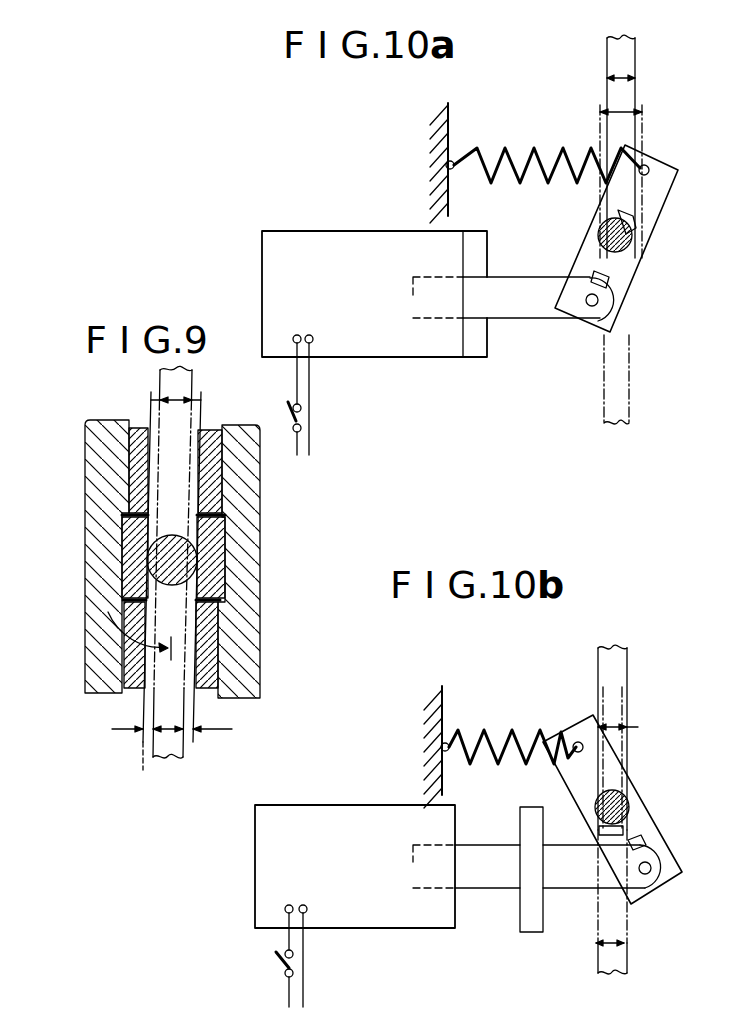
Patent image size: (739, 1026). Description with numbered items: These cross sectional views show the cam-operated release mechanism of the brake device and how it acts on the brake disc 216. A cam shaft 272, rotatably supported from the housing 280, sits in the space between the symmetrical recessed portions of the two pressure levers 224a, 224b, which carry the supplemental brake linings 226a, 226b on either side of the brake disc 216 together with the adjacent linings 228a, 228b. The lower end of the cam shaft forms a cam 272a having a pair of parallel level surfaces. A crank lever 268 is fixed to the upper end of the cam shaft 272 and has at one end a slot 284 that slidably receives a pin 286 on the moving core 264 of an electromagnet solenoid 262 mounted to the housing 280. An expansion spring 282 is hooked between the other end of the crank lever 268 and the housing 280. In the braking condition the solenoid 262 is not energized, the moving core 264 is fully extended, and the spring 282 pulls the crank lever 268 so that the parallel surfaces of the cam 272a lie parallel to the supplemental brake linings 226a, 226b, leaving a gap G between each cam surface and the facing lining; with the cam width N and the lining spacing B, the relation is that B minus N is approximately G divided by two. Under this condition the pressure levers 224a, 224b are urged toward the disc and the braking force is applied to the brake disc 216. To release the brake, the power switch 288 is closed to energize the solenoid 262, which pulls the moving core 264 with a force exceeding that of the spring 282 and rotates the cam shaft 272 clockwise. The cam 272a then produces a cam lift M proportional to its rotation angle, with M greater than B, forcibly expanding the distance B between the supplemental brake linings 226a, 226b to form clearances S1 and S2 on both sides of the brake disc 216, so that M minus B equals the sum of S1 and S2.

In FIG. 9, the brake disc 216 is at (143, 772).
In FIG. 10a, the brake disc 216 is at (606, 387).
In FIG. 10b, the brake disc 216 is at (603, 668).
In FIG. 9, the pressure lever 224a is at (236, 668).
In FIG. 9, the pressure lever 224b is at (98, 680).
In FIG. 9, the supplemental brake lining 226a is at (210, 696).
In FIG. 9, the supplemental brake lining 226b is at (127, 696).
In FIG. 9, the upper bushing 228a is at (240, 568).
In FIG. 9, the upper bushing 228b is at (125, 578).
In FIG. 10a, the electromagnet solenoid 262 is at (345, 247).
In FIG. 10b, the electromagnet solenoid 262 is at (327, 818).
In FIG. 10a, the moving core 264 is at (520, 300).
In FIG. 10b, the moving core 264 is at (493, 878).
In FIG. 10a, the crank lever 268 is at (643, 252).
In FIG. 10b, the crank lever 268 is at (573, 783).
In FIG. 10a, the cam shaft 272 is at (598, 222).
In FIG. 10b, the cam shaft 272 is at (572, 798).
In FIG. 9, the cam 272a is at (170, 535).
In FIG. 10a, the cam 272a is at (598, 240).
In FIG. 10b, the cam 272a is at (618, 790).
In FIG. 10a, the housing 280 is at (448, 116).
In FIG. 10b, the housing 280 is at (445, 700).
In FIG. 10a, the expansion spring 282 is at (530, 157).
In FIG. 10b, the expansion spring 282 is at (526, 736).
In FIG. 10a, the slot 284 is at (617, 290).
In FIG. 10b, the slot 284 is at (644, 852).
In FIG. 10a, the pin 286 is at (583, 322).
In FIG. 10b, the pin 286 is at (660, 892).
In FIG. 10a, the power switch 288 is at (288, 414).
In FIG. 10b, the power switch 288 is at (275, 964).
In FIG. 9, the cam lift M is at (176, 410).
In FIG. 10a, the cam lift M is at (628, 108).
In FIG. 9, the distance between supplemental brake linings B is at (167, 737).
In FIG. 10a, the distance between supplemental brake linings B is at (621, 66).
In FIG. 10b, the distance between supplemental brake linings B is at (610, 933).
In FIG. 10b, the cam width N is at (611, 709).
In FIG. 10b, the gap G is at (629, 727).
In FIG. 9, the clearance S1 is at (197, 734).
In FIG. 9, the clearance S2 is at (120, 734).